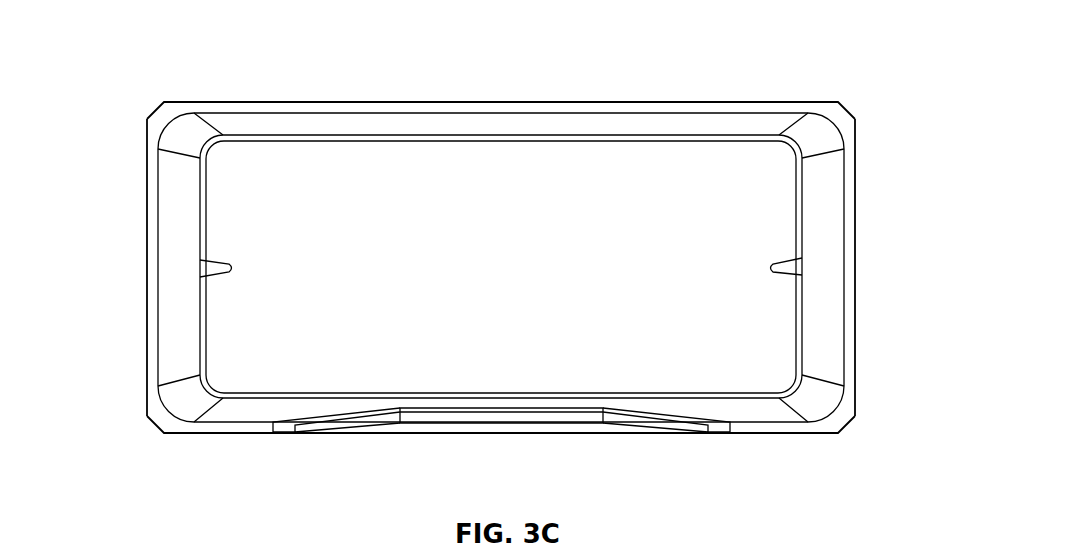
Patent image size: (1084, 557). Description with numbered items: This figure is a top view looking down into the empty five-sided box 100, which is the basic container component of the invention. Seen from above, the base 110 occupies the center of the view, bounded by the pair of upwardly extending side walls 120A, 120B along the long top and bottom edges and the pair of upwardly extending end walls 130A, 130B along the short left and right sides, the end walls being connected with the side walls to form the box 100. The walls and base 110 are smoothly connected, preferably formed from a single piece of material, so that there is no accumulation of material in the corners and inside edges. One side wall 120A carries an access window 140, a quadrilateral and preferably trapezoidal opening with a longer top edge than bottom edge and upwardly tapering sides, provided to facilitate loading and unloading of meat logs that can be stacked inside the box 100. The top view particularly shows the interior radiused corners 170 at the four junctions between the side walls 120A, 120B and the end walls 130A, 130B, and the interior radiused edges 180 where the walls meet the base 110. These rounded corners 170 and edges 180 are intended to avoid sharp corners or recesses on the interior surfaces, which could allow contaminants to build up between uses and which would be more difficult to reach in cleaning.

The five-sided box 100 is at (501, 269).
The base 110 is at (522, 280).
The side wall 120A is at (775, 441).
The side wall 120B is at (538, 100).
The end wall 130A is at (143, 270).
The end wall 130B is at (858, 272).
The access window 140 is at (503, 440).
The radiused corners 170 is at (213, 147).
The radiused edges 180 is at (523, 141).